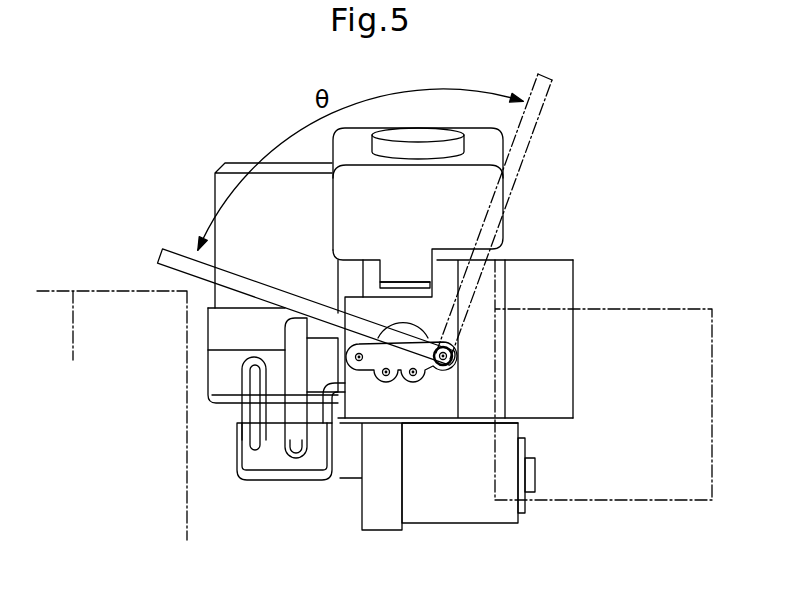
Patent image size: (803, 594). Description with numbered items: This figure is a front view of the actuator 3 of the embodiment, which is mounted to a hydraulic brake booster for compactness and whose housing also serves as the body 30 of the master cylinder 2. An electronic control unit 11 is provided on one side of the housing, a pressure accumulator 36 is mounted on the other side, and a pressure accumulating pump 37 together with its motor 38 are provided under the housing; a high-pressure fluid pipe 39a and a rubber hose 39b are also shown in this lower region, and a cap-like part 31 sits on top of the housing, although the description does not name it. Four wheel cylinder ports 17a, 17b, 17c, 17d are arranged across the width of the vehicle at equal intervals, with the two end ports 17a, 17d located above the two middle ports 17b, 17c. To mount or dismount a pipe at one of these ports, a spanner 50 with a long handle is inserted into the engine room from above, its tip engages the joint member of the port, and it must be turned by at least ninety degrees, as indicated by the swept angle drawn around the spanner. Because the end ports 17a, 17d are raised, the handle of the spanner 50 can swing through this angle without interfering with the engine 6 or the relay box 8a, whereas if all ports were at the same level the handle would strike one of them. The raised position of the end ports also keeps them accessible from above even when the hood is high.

The master cylinder 2 is at (436, 316).
The actuator 3 is at (518, 328).
The engine 6 is at (73, 291).
The relay box 8a is at (657, 348).
The electronic control unit 11 is at (557, 287).
The wheel cylinder port 17a is at (357, 366).
The wheel cylinder port 17b is at (385, 382).
The wheel cylinder port 17c is at (413, 382).
The wheel cylinder port 17d is at (444, 368).
The body of the master cylinder 30 is at (444, 331).
The knob 31 is at (425, 130).
The pressure accumulator 36 is at (213, 292).
The pressure accumulating pump 37 is at (263, 458).
The motor 38 is at (488, 510).
The high-pressure fluid pipe 39a is at (270, 467).
The rubber hose 39b is at (292, 383).
The spanner 50 is at (173, 243).